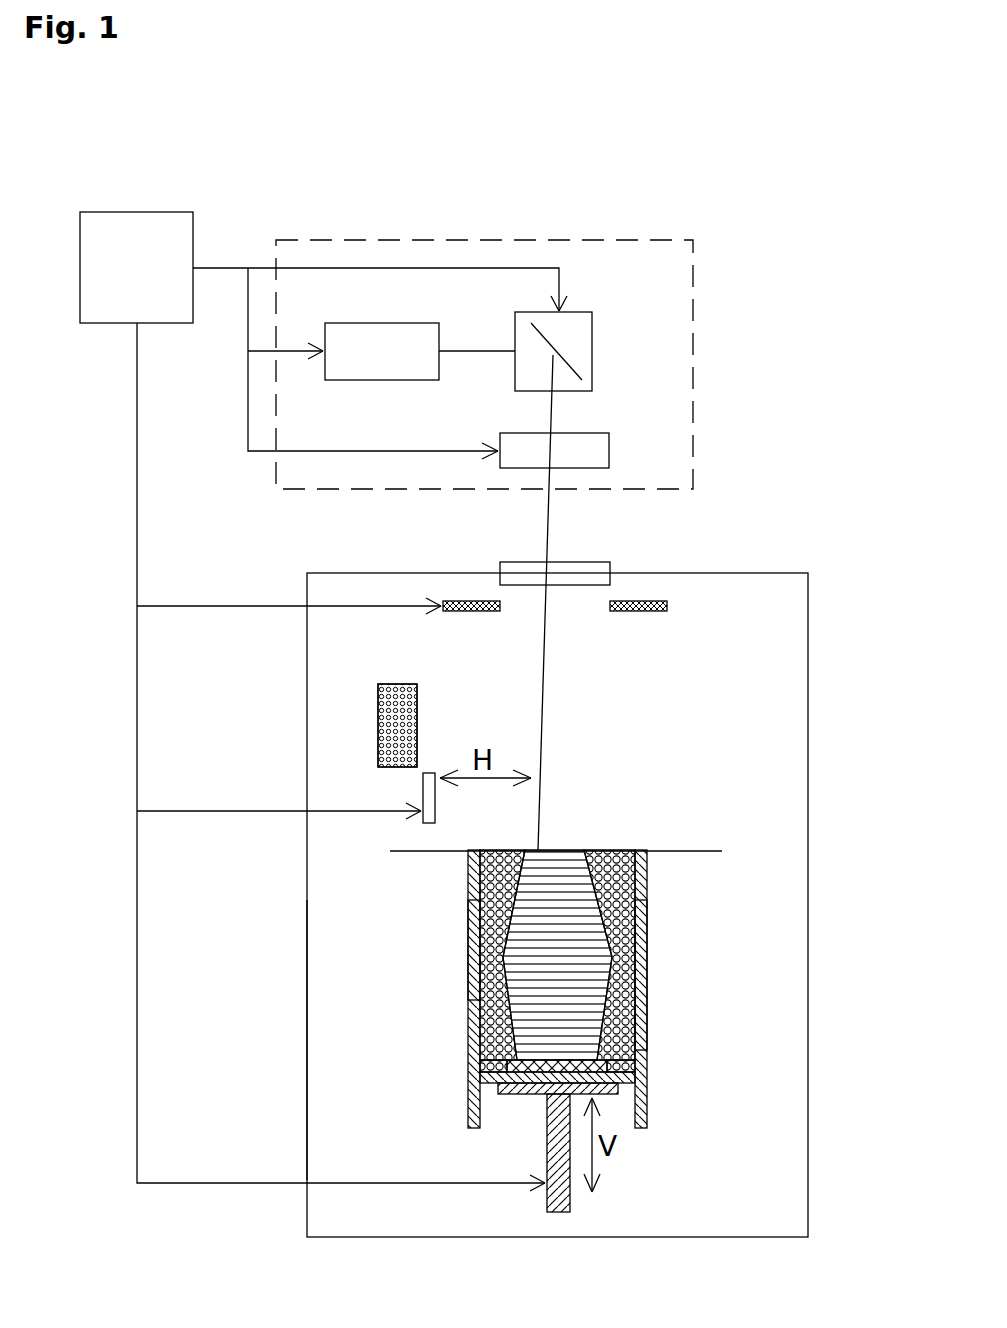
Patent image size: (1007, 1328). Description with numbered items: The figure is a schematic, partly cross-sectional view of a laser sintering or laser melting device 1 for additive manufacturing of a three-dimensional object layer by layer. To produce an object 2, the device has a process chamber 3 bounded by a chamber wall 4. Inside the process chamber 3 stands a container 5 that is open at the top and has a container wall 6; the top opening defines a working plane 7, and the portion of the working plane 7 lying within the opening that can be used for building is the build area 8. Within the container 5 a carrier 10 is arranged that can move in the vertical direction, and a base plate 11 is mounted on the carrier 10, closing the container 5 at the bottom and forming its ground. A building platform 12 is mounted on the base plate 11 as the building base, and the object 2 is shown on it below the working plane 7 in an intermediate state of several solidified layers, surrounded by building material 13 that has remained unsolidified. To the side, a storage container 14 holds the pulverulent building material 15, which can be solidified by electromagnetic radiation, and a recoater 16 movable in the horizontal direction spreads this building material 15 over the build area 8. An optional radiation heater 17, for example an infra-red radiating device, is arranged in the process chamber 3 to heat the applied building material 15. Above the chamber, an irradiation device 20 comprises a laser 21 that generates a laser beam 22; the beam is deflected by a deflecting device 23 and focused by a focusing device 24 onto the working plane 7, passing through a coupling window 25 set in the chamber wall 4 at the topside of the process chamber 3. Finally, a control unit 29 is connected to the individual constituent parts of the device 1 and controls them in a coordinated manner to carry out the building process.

The laser sintering or laser melting device 1 is at (778, 238).
The object 2 is at (580, 898).
The process chamber 3 is at (728, 605).
The chamber wall 4 is at (307, 1040).
The container 5 is at (647, 1043).
The container wall 6 is at (645, 985).
The working plane 7 is at (697, 850).
The build area 8 is at (612, 850).
The carrier 10 is at (535, 1096).
The base plate 11 is at (500, 1083).
The building platform 12 is at (478, 1067).
The building material 13 is at (478, 892).
The storage container 14 is at (395, 683).
The pulverulent building material 15 is at (417, 727).
The recoater 16 is at (428, 793).
The radiation heater 17 is at (467, 603).
The irradiation device 20 is at (694, 350).
The laser 21 is at (385, 381).
The laser beam 22 is at (459, 352).
The deflecting device 23 is at (583, 323).
The focusing device 24 is at (580, 445).
The coupling window 25 is at (588, 573).
The control unit 29 is at (323, 701).